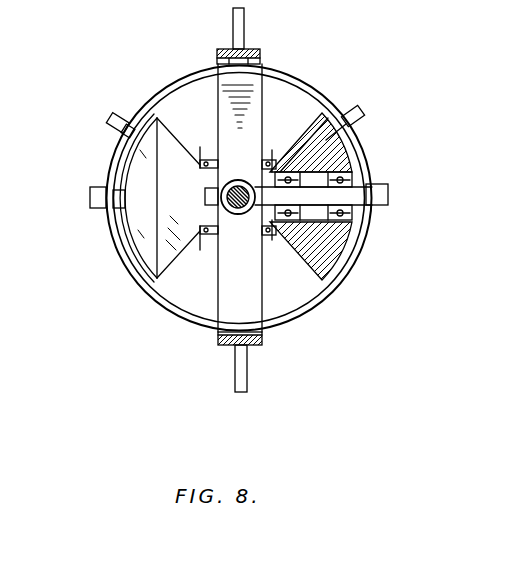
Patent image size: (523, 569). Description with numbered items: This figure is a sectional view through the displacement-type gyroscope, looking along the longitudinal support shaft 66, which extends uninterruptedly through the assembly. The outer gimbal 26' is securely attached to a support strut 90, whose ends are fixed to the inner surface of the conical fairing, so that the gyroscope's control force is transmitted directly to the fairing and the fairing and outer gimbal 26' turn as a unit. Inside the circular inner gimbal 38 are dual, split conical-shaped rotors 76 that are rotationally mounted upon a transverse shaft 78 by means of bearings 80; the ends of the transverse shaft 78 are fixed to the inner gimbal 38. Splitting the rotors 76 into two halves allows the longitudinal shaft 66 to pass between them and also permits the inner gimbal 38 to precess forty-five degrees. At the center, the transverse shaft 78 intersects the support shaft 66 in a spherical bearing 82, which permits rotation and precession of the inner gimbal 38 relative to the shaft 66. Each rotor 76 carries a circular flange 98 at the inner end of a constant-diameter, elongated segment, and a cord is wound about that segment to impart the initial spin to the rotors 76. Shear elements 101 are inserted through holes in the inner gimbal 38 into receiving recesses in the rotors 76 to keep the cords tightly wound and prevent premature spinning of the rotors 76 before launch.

The outer gimbal 26' is at (253, 36).
The inner gimbal 38 is at (318, 90).
The longitudinal shaft 66 is at (238, 180).
The conical-shaped rotors 76 is at (141, 226).
The transverse shaft 78 is at (390, 193).
The bearings 80 is at (352, 182).
The spherical bearing 82 is at (241, 215).
The support strut 90 is at (248, 366).
The circular flange 98 is at (204, 151).
The shear elements 101 is at (360, 112).